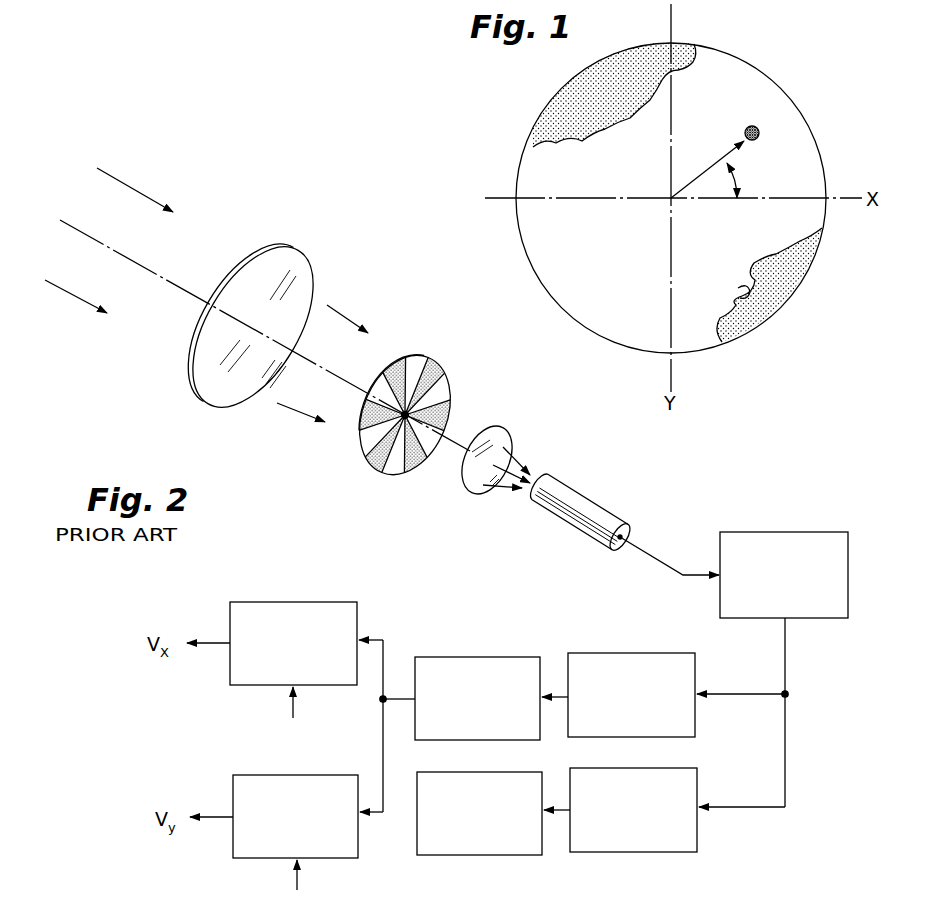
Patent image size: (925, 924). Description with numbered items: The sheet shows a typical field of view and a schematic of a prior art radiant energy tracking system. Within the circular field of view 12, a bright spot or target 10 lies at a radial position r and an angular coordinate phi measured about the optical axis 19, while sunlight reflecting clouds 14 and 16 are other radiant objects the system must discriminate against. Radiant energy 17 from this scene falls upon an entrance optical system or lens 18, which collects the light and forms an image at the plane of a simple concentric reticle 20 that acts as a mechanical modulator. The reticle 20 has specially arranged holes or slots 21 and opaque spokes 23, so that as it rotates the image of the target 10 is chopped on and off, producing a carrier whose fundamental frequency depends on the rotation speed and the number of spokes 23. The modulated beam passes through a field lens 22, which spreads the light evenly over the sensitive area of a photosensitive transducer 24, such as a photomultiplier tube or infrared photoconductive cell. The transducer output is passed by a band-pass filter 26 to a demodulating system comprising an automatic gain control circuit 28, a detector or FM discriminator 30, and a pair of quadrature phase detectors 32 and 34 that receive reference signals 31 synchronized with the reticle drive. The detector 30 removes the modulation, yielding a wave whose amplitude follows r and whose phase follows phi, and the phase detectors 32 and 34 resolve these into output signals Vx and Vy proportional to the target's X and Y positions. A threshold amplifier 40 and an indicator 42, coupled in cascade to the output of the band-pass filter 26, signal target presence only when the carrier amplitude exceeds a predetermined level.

In FIG. 1, the target 10 is at (753, 126).
In FIG. 1, the field of view 12 is at (811, 114).
In FIG. 1, the sunlight reflecting cloud 14 is at (677, 47).
In FIG. 1, the sunlight reflecting cloud 16 is at (797, 280).
In FIG. 1, the radiant energy 17 is at (173, 208).
In FIG. 1, the entrance optical system or lens 18 is at (291, 251).
In FIG. 1, the optical axis 19 is at (100, 243).
In FIG. 1, the reticle 20 is at (427, 355).
In FIG. 1, the holes or slots 21 is at (430, 447).
In FIG. 1, the field lens 22 is at (497, 427).
In FIG. 1, the opaque spokes 23 is at (364, 432).
In FIG. 1, the photosensitive transducer 24 is at (588, 501).
In FIG. 2, the band-pass filter 26 is at (800, 531).
In FIG. 2, the automatic gain control circuit 28 is at (647, 653).
In FIG. 2, the detector or FM discriminator 30 is at (495, 656).
In FIG. 2, the reference signals 31 is at (292, 713).
In FIG. 2, the quadrature phase detector 32 is at (301, 601).
In FIG. 2, the quadrature phase detector 34 is at (316, 775).
In FIG. 2, the threshold amplifier 40 is at (655, 768).
In FIG. 2, the indicator 42 is at (500, 771).